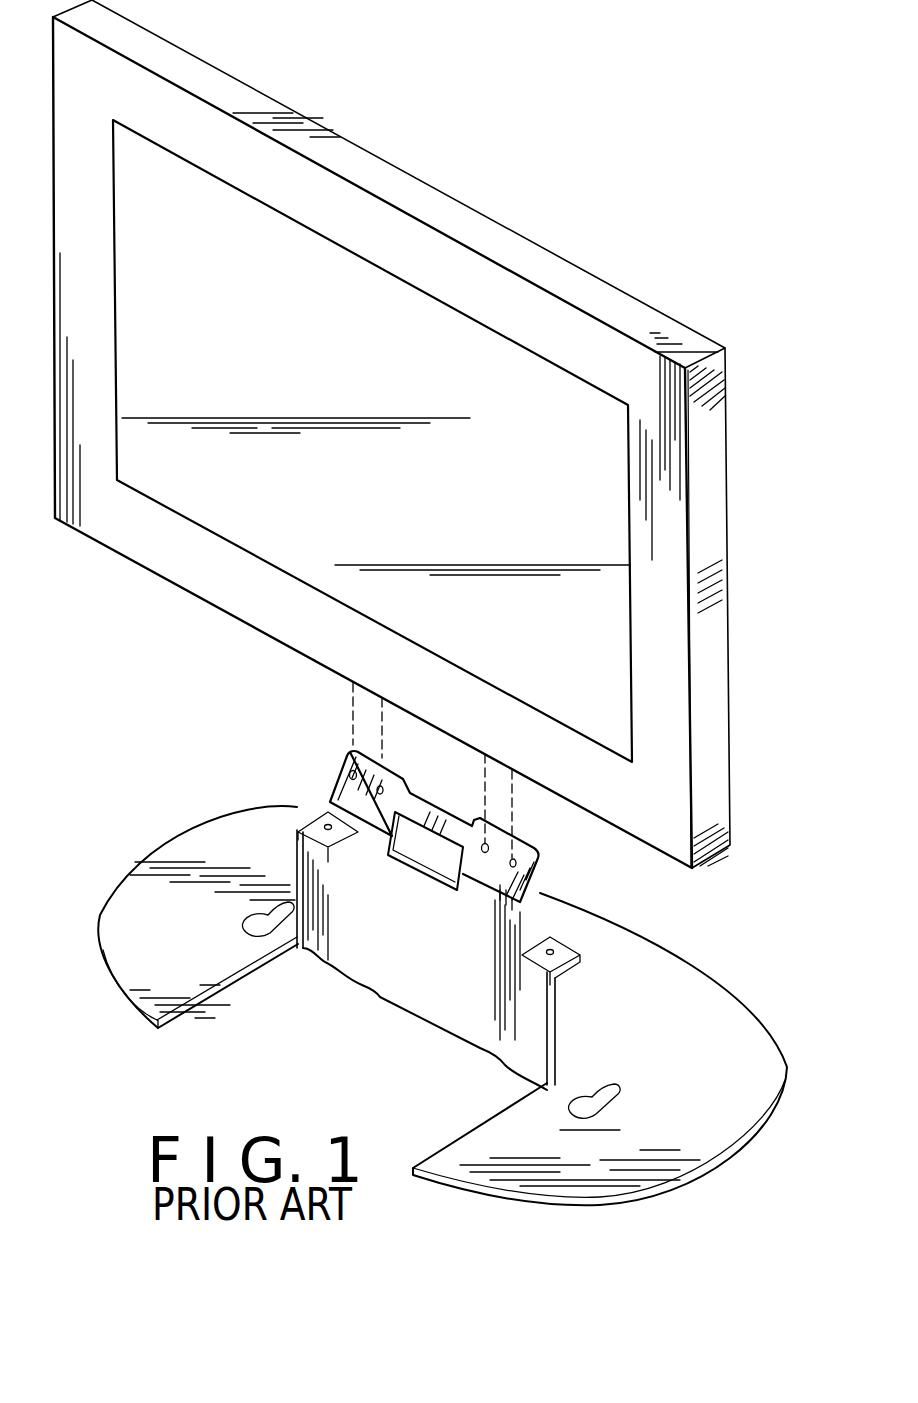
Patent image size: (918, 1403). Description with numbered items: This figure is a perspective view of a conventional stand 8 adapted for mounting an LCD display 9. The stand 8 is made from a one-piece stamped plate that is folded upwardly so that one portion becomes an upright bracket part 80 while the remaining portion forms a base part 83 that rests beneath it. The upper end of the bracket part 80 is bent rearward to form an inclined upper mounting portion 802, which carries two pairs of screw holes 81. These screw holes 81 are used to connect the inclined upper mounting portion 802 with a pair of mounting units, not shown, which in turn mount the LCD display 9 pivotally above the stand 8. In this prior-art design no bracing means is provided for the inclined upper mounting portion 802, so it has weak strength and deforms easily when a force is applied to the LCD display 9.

The LCD display 9 is at (602, 300).
The conventional stand 8 is at (456, 1005).
The bracket part 80 is at (405, 986).
The screw holes 81 is at (489, 809).
The inclined upper mounting portion 802 is at (538, 890).
The base part 83 is at (694, 962).